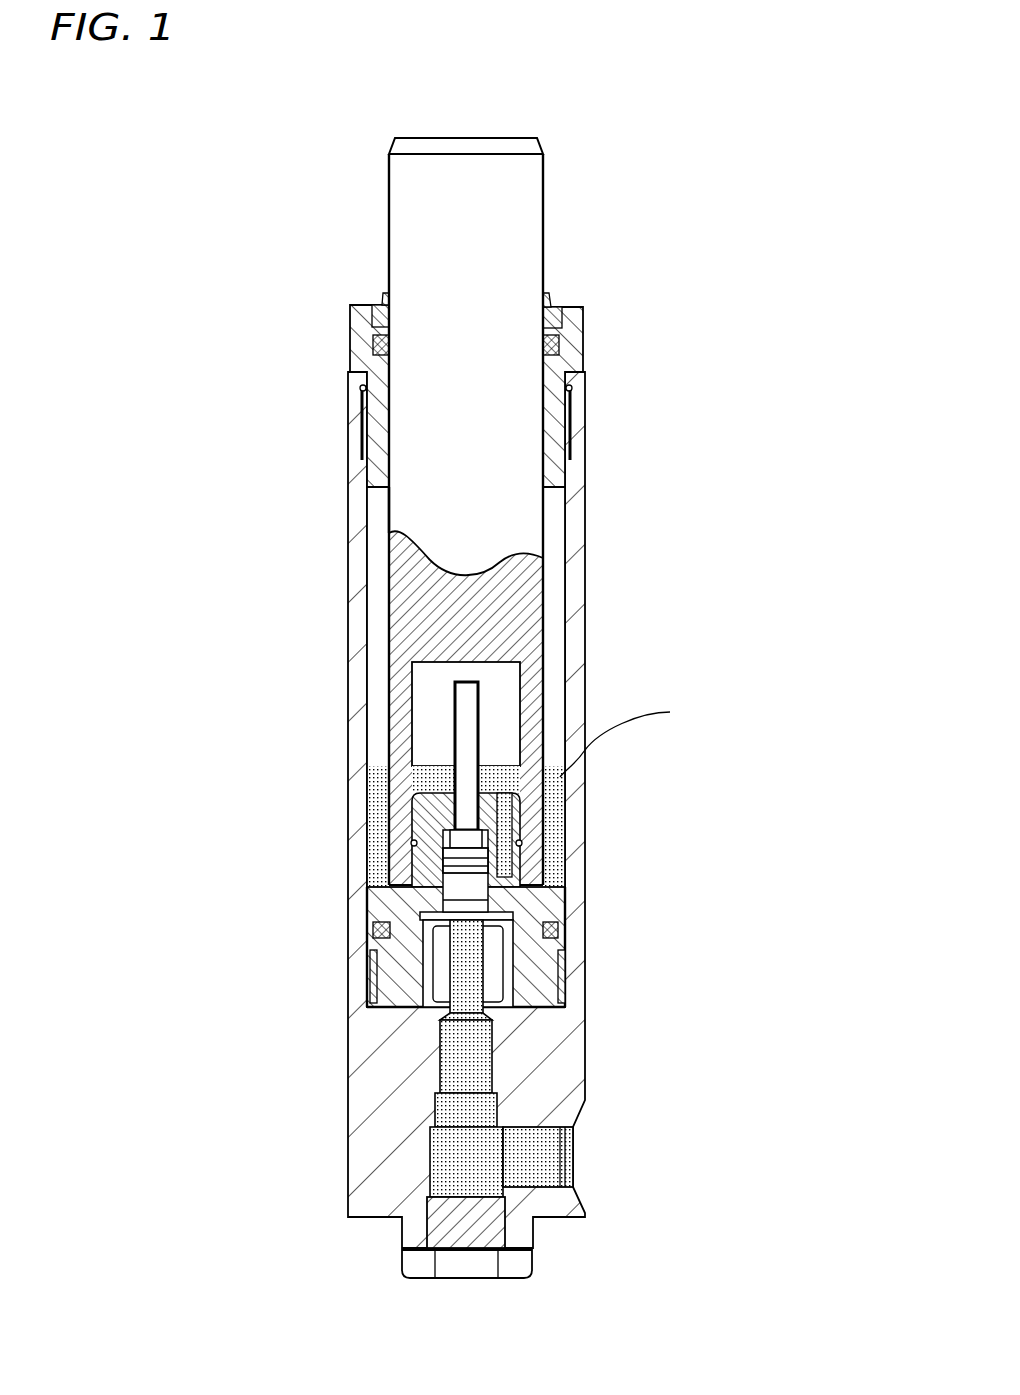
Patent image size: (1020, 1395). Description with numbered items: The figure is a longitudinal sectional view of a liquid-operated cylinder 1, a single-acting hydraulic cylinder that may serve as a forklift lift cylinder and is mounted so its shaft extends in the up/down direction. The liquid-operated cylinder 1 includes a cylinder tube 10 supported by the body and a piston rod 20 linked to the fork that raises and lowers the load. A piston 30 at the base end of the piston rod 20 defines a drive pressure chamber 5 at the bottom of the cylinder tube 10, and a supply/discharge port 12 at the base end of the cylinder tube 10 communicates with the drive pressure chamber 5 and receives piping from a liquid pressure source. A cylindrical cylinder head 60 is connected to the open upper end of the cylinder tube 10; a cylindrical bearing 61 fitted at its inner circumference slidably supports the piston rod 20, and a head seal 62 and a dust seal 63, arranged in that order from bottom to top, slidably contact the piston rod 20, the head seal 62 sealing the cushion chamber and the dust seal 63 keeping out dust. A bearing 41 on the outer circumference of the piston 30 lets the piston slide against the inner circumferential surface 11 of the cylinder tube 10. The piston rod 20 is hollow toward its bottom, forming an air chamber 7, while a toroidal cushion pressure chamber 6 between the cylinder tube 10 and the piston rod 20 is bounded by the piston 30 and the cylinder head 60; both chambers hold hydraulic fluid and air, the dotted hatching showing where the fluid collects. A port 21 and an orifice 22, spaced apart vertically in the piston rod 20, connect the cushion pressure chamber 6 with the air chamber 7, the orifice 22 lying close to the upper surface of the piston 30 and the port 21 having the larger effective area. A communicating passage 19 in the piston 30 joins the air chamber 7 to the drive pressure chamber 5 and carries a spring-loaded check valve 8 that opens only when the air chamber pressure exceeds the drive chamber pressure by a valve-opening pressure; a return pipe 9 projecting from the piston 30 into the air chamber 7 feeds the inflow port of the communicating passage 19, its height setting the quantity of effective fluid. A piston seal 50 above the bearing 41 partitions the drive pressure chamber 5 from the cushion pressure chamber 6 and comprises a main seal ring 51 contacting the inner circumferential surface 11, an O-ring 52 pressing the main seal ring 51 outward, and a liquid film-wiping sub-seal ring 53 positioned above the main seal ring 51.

The liquid-operated cylinder 1 is at (512, 702).
The piston rod 20 is at (517, 253).
The dust seal 63 is at (382, 300).
The cylinder head 60 is at (573, 318).
The head seal 62 is at (373, 347).
The bearing 61 is at (387, 423).
The cylinder tube 10 is at (582, 532).
The inner circumferential surface 11 is at (566, 594).
The air chamber 7 is at (428, 685).
The return pipe 9 is at (457, 730).
The cushion pressure chamber 6 is at (373, 797).
The port 21 is at (563, 793).
The communicating passage 19 is at (447, 832).
The orifice 22 is at (525, 877).
The check valve 8 is at (462, 885).
The piston 30 is at (375, 897).
The sub-seal ring 53 is at (560, 920).
The main seal ring 51 is at (565, 932).
The piston seal 50 is at (710, 877).
The drive pressure chamber 5 is at (447, 937).
The O-ring 52 is at (563, 950).
The bearing 41 is at (367, 980).
The supply/discharge port 12 is at (542, 1150).